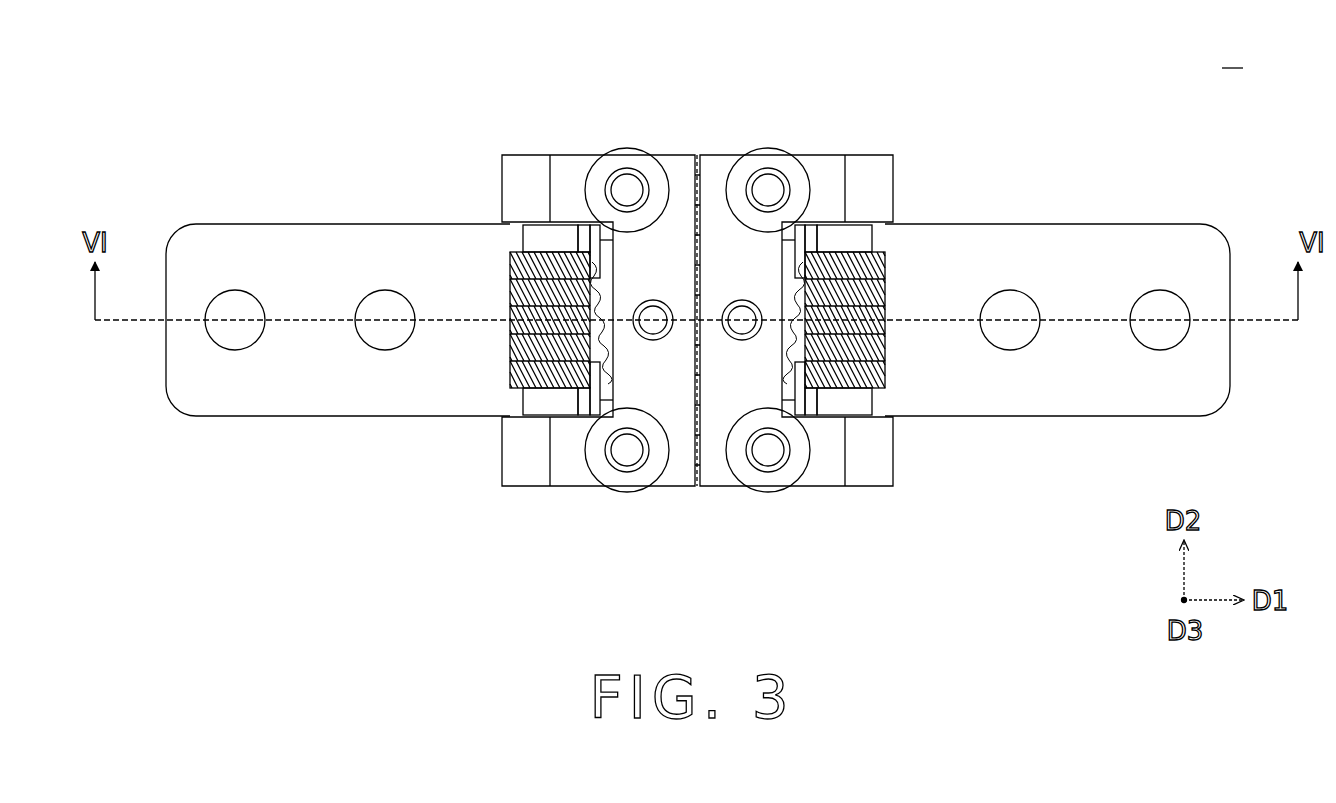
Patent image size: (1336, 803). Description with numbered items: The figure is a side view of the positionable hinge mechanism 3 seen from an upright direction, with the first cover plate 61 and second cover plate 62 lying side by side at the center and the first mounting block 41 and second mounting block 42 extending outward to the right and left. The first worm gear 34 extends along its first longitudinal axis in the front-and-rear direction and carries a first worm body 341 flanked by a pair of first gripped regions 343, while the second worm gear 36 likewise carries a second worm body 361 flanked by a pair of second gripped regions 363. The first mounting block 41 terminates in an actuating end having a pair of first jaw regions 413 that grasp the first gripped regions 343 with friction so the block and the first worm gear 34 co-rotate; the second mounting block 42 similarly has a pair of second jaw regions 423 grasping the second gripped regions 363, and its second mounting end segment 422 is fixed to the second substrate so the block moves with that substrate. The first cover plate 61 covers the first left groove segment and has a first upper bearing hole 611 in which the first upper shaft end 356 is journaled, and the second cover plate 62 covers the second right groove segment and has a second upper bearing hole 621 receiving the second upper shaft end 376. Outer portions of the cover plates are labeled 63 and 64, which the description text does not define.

The positionable hinge mechanism 3 is at (1232, 53).
The first worm gear 34 is at (857, 302).
The first worm body 341 is at (888, 270).
The first gripped regions 343 is at (855, 240).
The first upper shaft end 356 is at (745, 338).
The second worm gear 36 is at (530, 310).
The second worm body 361 is at (510, 280).
The second gripped regions 363 is at (547, 240).
The second upper shaft end 376 is at (655, 338).
The first mounting block 41 is at (1105, 253).
The first jaw regions 413 is at (801, 240).
The second mounting block 42 is at (327, 304).
The second mounting end segment 422 is at (185, 390).
The second jaw regions 423 is at (592, 240).
The first cover plate 61 is at (837, 319).
The first upper bearing hole 611 is at (743, 300).
The second cover plate 62 is at (555, 334).
The second upper bearing hole 621 is at (653, 300).
The first plate side blocks 63 is at (862, 180).
The second plate side blocks 64 is at (513, 192).